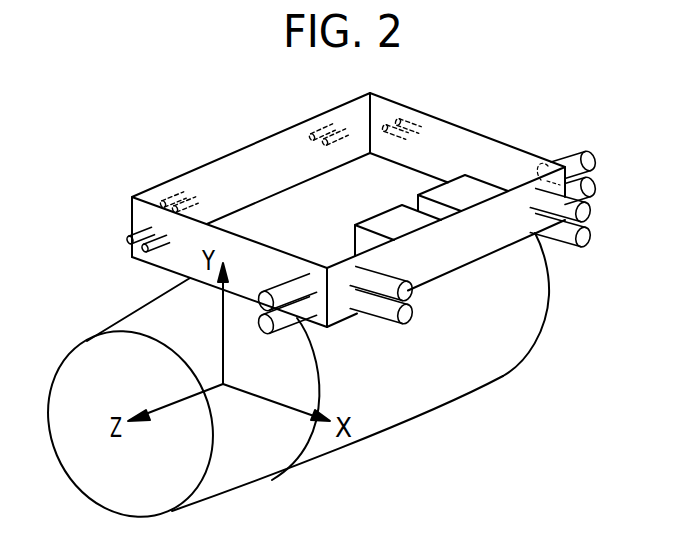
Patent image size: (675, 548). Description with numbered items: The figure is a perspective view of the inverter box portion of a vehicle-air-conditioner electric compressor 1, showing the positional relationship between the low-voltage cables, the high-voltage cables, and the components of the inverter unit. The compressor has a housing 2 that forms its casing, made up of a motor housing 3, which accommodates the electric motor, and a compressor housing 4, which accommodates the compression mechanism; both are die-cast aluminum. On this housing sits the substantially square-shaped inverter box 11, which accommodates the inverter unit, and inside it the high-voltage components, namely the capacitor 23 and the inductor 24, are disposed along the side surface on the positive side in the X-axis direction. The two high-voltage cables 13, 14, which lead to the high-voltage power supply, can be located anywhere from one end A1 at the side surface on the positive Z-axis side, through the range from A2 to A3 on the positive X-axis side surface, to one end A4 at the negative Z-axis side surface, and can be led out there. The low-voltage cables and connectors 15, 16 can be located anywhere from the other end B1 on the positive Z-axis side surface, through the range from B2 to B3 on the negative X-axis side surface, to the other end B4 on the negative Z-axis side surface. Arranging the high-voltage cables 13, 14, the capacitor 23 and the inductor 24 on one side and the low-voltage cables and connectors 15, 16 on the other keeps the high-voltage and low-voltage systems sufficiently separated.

The vehicle-air-conditioner electric compressor 1 is at (108, 122).
The housing 2 is at (396, 444).
The motor housing 3 is at (532, 329).
The compressor housing 4 is at (245, 480).
The inverter box 11 is at (263, 139).
The high-voltage cable 13 is at (412, 292).
The high-voltage cable 14 is at (408, 320).
The low-voltage cable and connector 15 is at (138, 230).
The low-voltage cable and connector 16 is at (151, 250).
The capacitor 23 is at (478, 187).
The inductor 24 is at (380, 222).
The one end of the positive Z-axis side surface A1 is at (286, 321).
The start of the positive X-axis side surface range A2 is at (413, 314).
The end of the positive X-axis side surface range A3 is at (577, 218).
The one end of the negative Z-axis side surface A4 is at (584, 176).
The other end of the positive Z-axis side surface B1 is at (120, 248).
The start of the negative X-axis side surface range B2 is at (170, 181).
The end of the negative X-axis side surface range B3 is at (315, 118).
The other end of the negative Z-axis side surface B4 is at (415, 110).